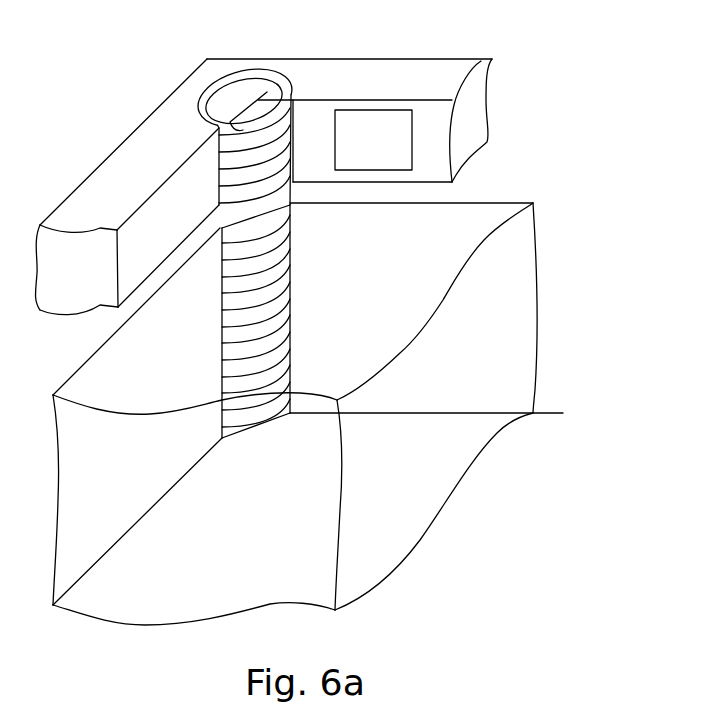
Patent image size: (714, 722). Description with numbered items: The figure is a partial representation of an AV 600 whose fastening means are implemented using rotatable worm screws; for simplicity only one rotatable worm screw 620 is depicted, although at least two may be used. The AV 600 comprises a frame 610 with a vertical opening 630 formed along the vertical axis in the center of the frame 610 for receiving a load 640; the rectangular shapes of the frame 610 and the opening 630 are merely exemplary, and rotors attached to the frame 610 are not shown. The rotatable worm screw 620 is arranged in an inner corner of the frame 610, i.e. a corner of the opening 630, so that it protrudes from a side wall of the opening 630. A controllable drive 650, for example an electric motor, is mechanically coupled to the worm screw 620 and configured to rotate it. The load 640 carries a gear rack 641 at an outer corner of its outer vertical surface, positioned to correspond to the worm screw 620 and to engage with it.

The AV 600 is at (535, 565).
The frame 610 is at (440, 58).
The rotatable worm screw 620 is at (240, 85).
The vertical opening 630 is at (438, 190).
The load 640 is at (540, 277).
The gear rack 641 is at (292, 252).
The controllable drive 650 is at (252, 90).